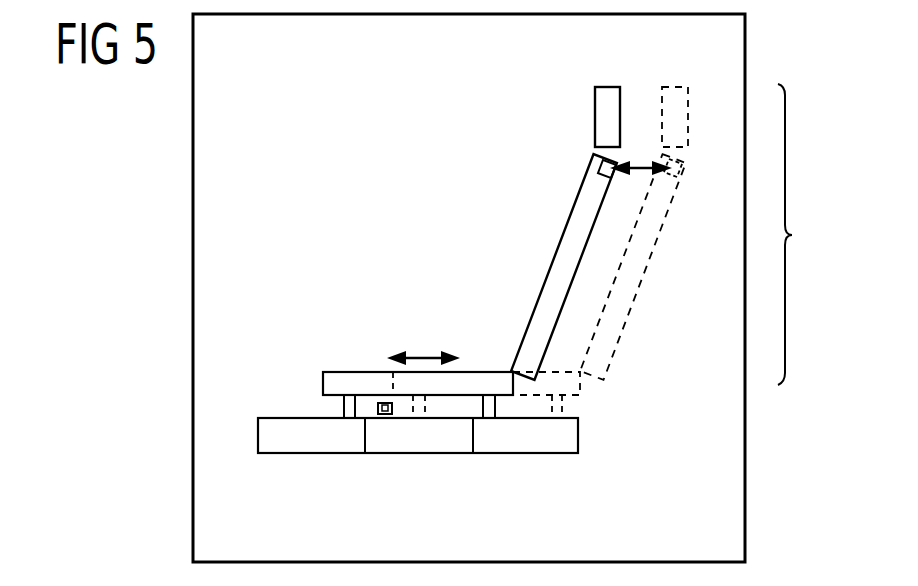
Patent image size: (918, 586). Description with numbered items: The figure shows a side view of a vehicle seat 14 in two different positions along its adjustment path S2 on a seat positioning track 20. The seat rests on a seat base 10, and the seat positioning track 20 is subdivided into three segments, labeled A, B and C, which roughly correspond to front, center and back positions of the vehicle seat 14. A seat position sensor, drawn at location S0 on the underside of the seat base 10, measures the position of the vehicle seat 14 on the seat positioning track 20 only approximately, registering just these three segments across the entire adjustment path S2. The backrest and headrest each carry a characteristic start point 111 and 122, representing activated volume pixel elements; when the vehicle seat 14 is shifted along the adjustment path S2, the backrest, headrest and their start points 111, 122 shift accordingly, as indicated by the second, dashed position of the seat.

The seat base 10 is at (332, 384).
The vehicle seat 14 is at (800, 234).
The seat positioning track 20 is at (553, 445).
The start point 111 is at (682, 176).
The start point 122 is at (683, 88).
The sensor position / reference point S0 is at (390, 414).
The adjustment path S2 is at (422, 355).